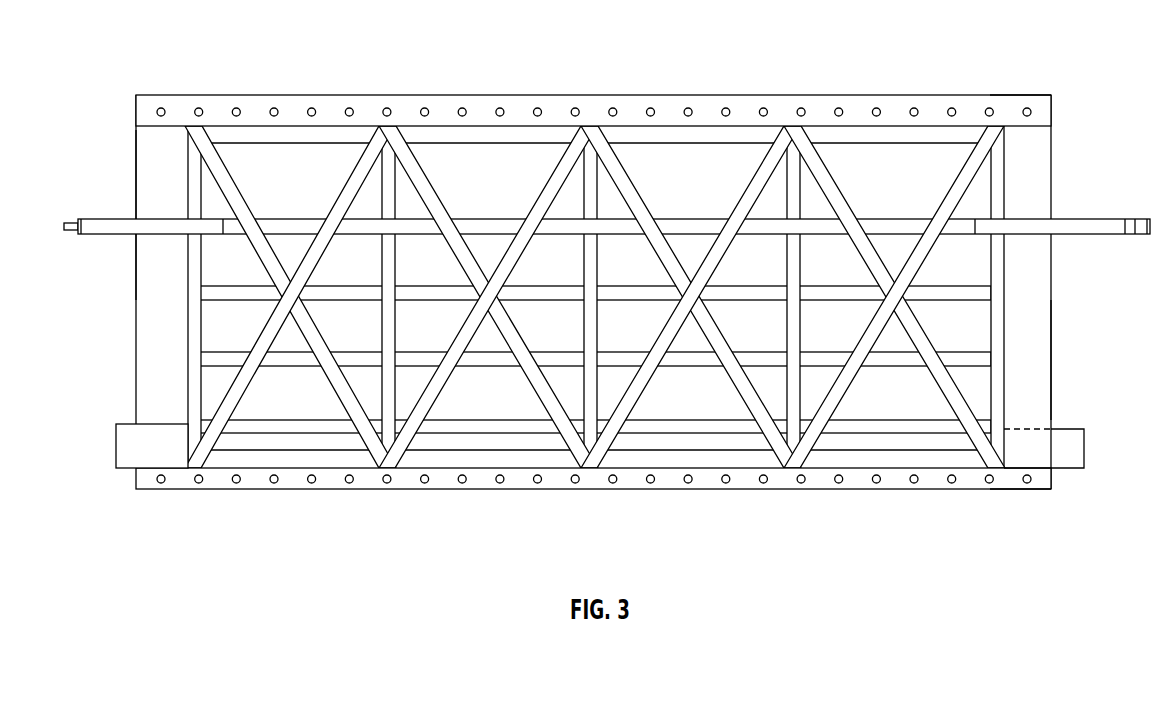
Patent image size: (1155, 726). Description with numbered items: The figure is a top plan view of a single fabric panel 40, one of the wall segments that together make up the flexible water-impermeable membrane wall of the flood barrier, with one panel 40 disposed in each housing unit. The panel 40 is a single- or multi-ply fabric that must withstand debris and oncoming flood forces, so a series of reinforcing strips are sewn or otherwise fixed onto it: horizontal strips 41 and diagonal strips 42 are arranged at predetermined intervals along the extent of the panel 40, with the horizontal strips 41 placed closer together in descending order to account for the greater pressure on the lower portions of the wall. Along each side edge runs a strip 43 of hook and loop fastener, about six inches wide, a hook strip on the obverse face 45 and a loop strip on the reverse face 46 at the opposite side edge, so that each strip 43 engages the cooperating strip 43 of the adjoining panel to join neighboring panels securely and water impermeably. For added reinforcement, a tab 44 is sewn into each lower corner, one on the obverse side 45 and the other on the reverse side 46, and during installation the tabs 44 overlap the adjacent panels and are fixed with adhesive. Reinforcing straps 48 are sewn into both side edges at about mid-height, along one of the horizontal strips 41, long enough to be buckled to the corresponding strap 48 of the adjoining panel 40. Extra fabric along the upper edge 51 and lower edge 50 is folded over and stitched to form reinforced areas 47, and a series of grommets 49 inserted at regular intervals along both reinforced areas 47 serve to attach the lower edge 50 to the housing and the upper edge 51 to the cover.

The fabric panel 40 is at (600, 282).
The horizontal reinforcing strip 41 is at (218, 293).
The diagonal reinforcing strip 42 is at (760, 180).
The hook and loop fastener strip 43 is at (160, 292).
The tab 44 is at (127, 437).
The obverse face 45 is at (150, 167).
The reverse face 46 is at (1070, 392).
The reinforced area 47 is at (288, 115).
The reinforcing strap 48 is at (92, 227).
The grommet 49 is at (425, 112).
The lower edge 50 is at (1040, 488).
The upper edge 51 is at (1052, 112).